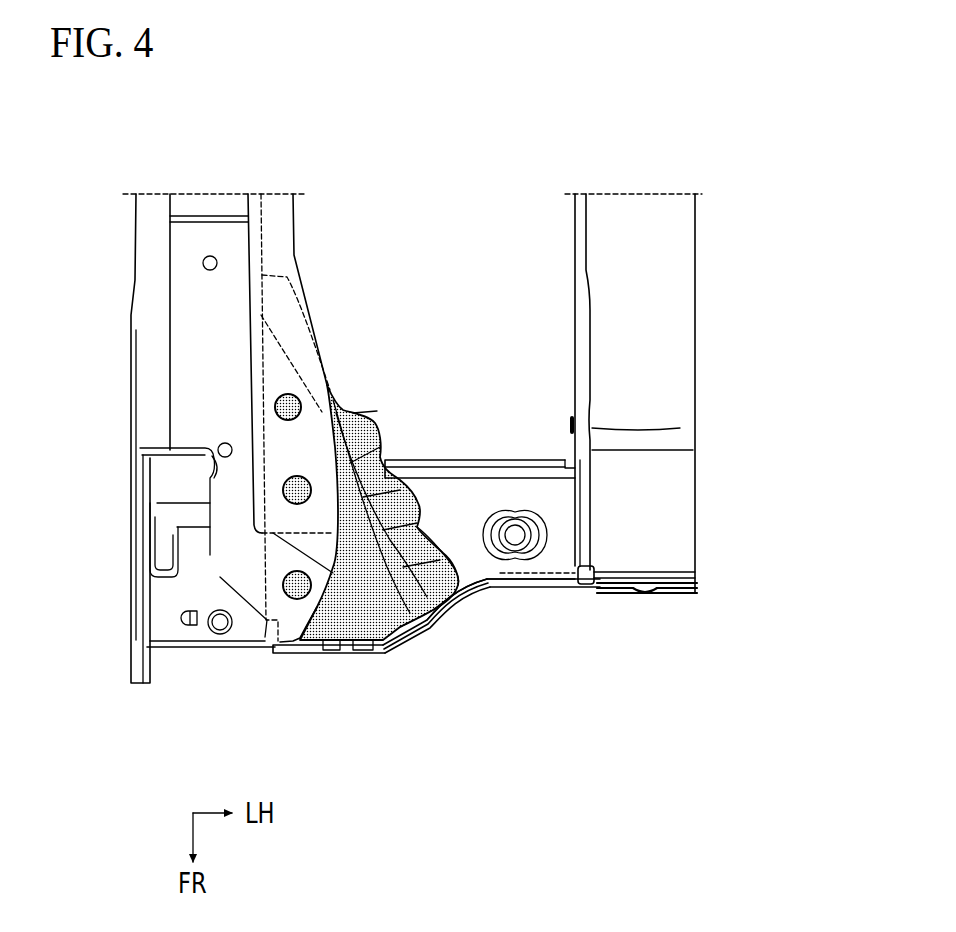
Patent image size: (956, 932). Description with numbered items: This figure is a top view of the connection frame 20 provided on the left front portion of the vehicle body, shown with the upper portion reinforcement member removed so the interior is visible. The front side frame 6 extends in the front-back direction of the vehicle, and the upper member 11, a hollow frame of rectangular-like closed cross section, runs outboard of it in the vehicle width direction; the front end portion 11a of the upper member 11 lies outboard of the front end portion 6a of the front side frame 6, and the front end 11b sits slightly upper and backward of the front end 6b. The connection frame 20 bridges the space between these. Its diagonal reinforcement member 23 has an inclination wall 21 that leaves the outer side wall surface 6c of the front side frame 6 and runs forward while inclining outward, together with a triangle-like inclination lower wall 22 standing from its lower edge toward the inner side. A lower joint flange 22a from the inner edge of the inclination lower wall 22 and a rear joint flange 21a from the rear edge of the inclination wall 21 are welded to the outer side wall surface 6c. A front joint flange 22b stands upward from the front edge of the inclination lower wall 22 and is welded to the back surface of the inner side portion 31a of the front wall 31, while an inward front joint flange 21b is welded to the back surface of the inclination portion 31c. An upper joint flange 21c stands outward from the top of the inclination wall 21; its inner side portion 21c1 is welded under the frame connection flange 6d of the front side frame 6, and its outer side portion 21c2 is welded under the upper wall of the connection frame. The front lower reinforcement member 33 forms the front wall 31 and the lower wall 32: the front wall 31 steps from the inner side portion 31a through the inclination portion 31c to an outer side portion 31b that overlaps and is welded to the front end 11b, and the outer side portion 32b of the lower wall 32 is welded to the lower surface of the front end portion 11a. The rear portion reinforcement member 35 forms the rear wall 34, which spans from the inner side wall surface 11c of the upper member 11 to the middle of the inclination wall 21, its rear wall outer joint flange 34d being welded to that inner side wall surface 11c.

The front side frame 6 is at (238, 458).
The front end portion of the front side frame 6a is at (150, 403).
The front end of the front side frame 6b is at (197, 647).
The outer side wall surface of the front side frame 6c is at (261, 230).
The frame connection flange 6d is at (283, 262).
The upper member 11 is at (677, 416).
The front end portion of the upper member 11a is at (640, 386).
The front end of the upper member 11b is at (650, 590).
The inner side wall surface of the upper member 11c is at (573, 262).
The connection frame 20 is at (471, 414).
The inclination wall 21 is at (360, 527).
The rear joint flange 21a is at (262, 293).
The inward front joint flange 21b is at (443, 603).
The upper joint flange 21c is at (332, 349).
The inner side portion of the upper joint flange 21c1 is at (290, 315).
The outer side portion of the upper joint flange 21c2 is at (433, 537).
The inclination lower wall 22 is at (418, 545).
The lower joint flange 22a is at (265, 483).
The front joint flange 22b is at (337, 653).
The diagonal reinforcement member 23 is at (386, 506).
The front wall 31 is at (545, 750).
The inner side portion of the front wall 31a is at (362, 653).
The outer side portion of the front wall 31b is at (560, 600).
The inclination portion of the front wall 31c is at (450, 617).
The lower wall 32 is at (560, 510).
The outer side portion of the lower wall 32b is at (503, 540).
The front lower reinforcement member 33 is at (592, 601).
The rear wall 34 is at (452, 458).
The rear wall outer joint flange 34d is at (572, 455).
The rear portion reinforcement member 35 is at (480, 469).